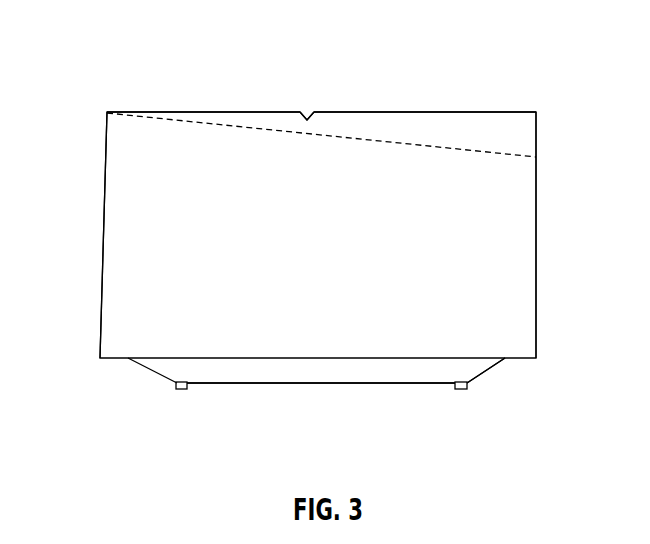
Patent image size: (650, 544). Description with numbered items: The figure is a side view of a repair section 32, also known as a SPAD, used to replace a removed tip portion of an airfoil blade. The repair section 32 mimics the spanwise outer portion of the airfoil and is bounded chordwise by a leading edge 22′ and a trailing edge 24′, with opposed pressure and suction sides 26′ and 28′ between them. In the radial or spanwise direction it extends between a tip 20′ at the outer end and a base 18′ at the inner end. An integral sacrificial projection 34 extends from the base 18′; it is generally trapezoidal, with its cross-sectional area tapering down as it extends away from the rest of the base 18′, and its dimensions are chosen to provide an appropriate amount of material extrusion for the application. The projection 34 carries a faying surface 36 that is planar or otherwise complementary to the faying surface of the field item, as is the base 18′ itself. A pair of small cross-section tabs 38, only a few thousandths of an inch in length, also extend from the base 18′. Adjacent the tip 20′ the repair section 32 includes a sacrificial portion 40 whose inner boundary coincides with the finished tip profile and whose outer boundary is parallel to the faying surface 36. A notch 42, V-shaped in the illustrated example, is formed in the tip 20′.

The repair section 32 is at (480, 73).
The suction side 28′ is at (331, 272).
The tip 20′ is at (143, 112).
The notch 42 is at (303, 110).
The sacrificial portion 40 is at (522, 122).
The trailing edge 24′ is at (536, 175).
The leading edge 22′ is at (107, 190).
The pressure side 26′ is at (112, 288).
The base 18′ is at (385, 360).
The faying surface 36 is at (327, 384).
The sacrificial projection 34 is at (477, 370).
The tabs 38 is at (178, 392).